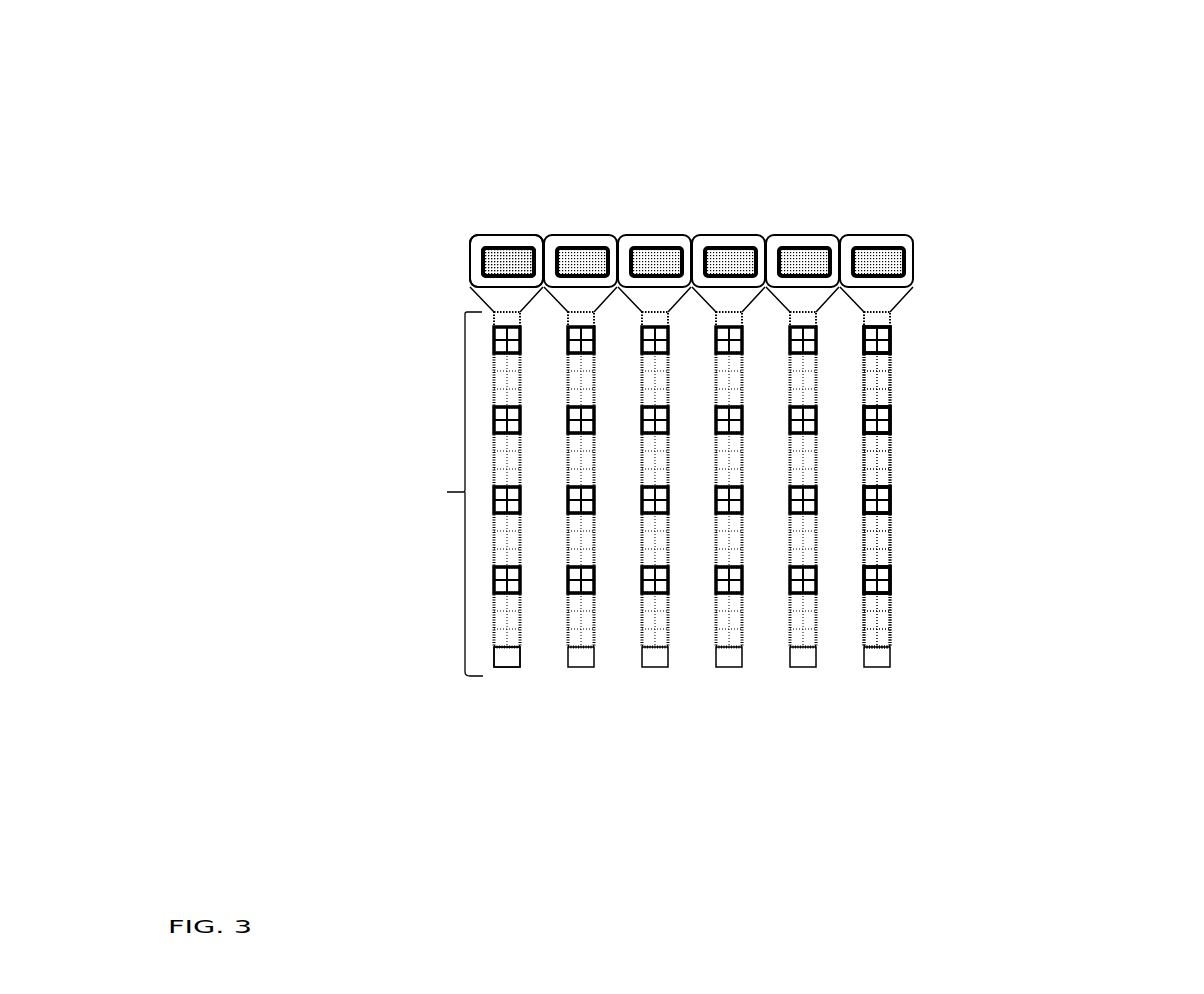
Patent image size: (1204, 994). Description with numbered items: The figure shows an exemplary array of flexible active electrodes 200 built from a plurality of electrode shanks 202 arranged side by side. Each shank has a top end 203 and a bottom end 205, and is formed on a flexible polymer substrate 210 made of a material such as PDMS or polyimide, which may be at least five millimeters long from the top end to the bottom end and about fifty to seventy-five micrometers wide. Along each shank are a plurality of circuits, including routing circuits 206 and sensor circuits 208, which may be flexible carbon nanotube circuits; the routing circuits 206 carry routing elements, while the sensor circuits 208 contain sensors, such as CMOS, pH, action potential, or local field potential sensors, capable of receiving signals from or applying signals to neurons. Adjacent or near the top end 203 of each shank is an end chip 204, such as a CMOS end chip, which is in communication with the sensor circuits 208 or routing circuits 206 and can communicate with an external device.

The array of flexible active electrodes 200 is at (1048, 67).
The electrode shanks 202 is at (653, 233).
The top end 203 is at (482, 235).
The end chip 204 is at (480, 259).
The bottom end 205 is at (510, 668).
The routing circuits 206 is at (893, 337).
The sensor circuits 208 is at (892, 383).
The flexible polymer substrate 210 is at (430, 494).